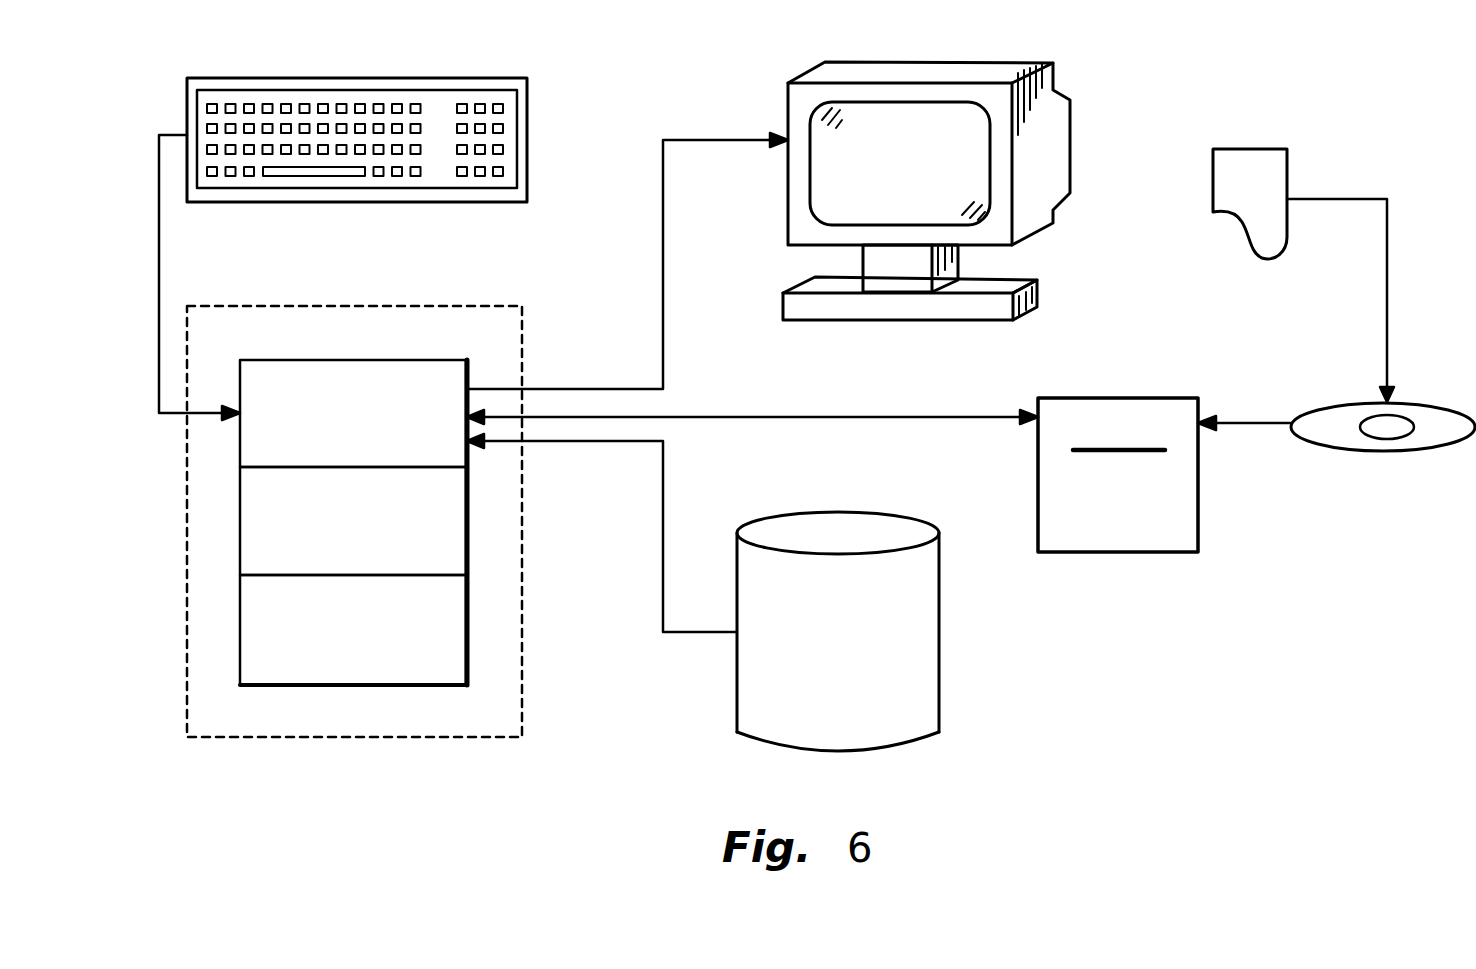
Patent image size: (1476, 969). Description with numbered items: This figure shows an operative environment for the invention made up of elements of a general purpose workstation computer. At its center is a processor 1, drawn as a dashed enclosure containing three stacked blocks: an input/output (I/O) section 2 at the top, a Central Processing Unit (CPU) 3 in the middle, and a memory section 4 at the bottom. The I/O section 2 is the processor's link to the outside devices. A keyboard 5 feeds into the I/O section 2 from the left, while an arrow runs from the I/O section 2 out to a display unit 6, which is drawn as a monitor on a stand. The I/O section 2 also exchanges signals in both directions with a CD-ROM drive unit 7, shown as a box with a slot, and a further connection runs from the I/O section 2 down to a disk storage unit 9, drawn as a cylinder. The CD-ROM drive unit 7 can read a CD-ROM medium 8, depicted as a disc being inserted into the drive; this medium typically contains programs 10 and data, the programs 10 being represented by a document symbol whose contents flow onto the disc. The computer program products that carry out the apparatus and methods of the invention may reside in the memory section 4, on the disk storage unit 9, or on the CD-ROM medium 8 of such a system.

The processor 1 is at (473, 305).
The input/output (I/O) section 2 is at (332, 363).
The Central Processing Unit (CPU) 3 is at (468, 538).
The memory section 4 is at (468, 668).
The keyboard 5 is at (506, 82).
The display unit 6 is at (998, 73).
The CD-ROM drive unit 7 is at (1068, 398).
The CD-ROM medium 8 is at (1360, 405).
The disk storage unit 9 is at (940, 607).
The programs 10 is at (1230, 158).